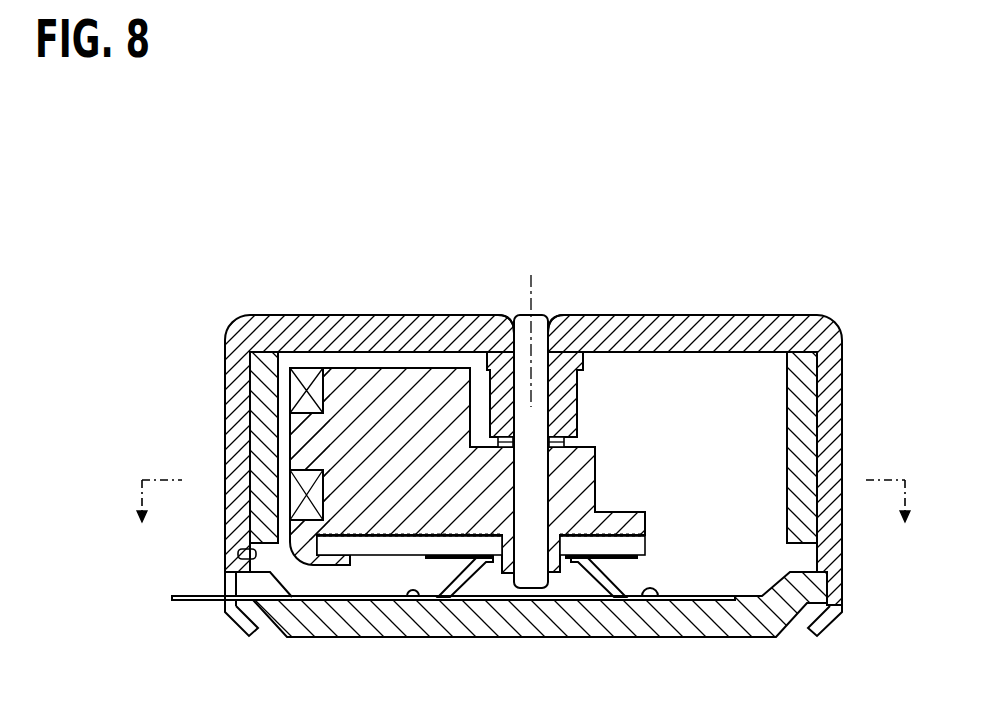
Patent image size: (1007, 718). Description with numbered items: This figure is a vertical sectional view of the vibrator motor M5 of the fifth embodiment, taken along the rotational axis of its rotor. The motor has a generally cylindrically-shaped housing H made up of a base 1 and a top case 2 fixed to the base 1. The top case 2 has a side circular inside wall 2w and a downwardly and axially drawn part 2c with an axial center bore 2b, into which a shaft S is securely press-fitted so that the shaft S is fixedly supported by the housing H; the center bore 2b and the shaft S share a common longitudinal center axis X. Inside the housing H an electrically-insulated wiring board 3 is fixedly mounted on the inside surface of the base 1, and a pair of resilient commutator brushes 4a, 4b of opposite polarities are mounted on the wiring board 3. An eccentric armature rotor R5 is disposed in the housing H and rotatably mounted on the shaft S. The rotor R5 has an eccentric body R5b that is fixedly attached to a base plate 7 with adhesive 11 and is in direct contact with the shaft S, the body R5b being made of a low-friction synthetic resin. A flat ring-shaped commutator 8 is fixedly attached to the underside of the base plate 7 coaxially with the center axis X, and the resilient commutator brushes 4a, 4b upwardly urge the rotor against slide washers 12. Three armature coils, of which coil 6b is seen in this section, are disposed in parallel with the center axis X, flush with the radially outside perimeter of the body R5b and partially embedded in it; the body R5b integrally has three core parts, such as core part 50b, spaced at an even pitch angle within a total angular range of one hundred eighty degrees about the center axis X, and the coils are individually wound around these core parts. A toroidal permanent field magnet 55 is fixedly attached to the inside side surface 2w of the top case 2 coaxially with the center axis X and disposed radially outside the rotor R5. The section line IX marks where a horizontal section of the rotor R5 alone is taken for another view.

The base 1 is at (762, 628).
The top case 2 is at (713, 333).
The axial center bore 2b is at (555, 333).
The downwardly and axially drawn part 2c is at (565, 382).
The side circular inside wall 2w is at (248, 552).
The wiring board 3 is at (710, 600).
The resilient commutator brush 4a is at (463, 583).
The resilient commutator brush 4b is at (598, 583).
The armature coil 6b is at (310, 375).
The base plate 7 is at (373, 545).
The flat ring-shaped commutator 8 is at (620, 560).
The adhesive 11 is at (393, 540).
The slide washers 12 is at (583, 443).
The core part 50b is at (303, 443).
The toroidal permanent field magnet 55 is at (263, 375).
The vibrator motor M5 is at (228, 321).
The eccentric armature rotor R5 is at (371, 365).
The eccentric body R5b is at (423, 393).
The shaft S is at (523, 343).
The longitudinal center axis X is at (531, 321).
The housing H is at (842, 415).
The section line IX— IX is at (523, 522).